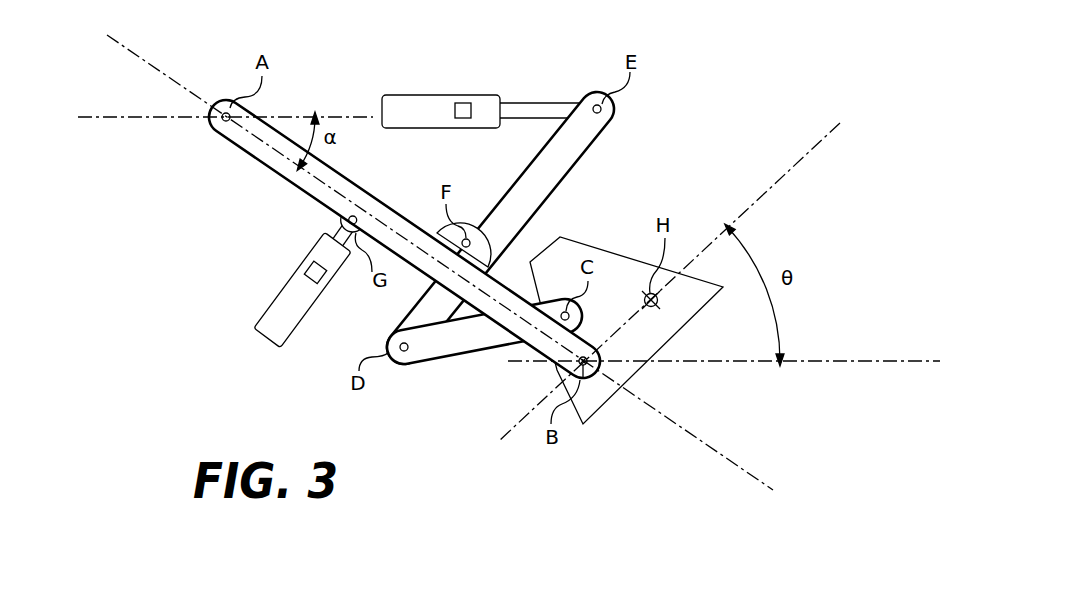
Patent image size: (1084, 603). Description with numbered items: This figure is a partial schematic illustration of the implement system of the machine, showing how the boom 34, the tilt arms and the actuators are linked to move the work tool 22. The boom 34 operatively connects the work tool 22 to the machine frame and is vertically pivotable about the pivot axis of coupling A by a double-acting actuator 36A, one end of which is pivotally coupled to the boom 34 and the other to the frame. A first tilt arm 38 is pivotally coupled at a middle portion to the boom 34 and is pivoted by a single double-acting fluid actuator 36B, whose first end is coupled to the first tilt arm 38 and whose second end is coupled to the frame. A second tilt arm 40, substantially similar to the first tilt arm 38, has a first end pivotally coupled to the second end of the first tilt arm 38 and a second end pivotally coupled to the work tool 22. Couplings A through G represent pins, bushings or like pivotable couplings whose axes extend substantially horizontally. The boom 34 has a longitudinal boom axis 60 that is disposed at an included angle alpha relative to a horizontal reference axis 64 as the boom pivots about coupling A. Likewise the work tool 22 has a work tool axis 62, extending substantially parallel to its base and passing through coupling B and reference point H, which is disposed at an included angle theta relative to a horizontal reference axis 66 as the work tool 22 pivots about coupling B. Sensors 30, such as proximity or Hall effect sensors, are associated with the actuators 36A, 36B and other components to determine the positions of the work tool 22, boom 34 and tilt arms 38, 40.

The work tool 22 is at (571, 237).
The sensor 30 is at (465, 103).
The boom 34 is at (250, 152).
The actuator 36A is at (262, 308).
The fluid actuator 36B is at (406, 93).
The first tilt arm 38 is at (598, 144).
The second tilt arm 40 is at (443, 364).
The boom axis 60 is at (775, 494).
The work tool axis 62 is at (811, 148).
The horizontal reference axis 64 is at (147, 119).
The horizontal reference axis 66 is at (841, 361).